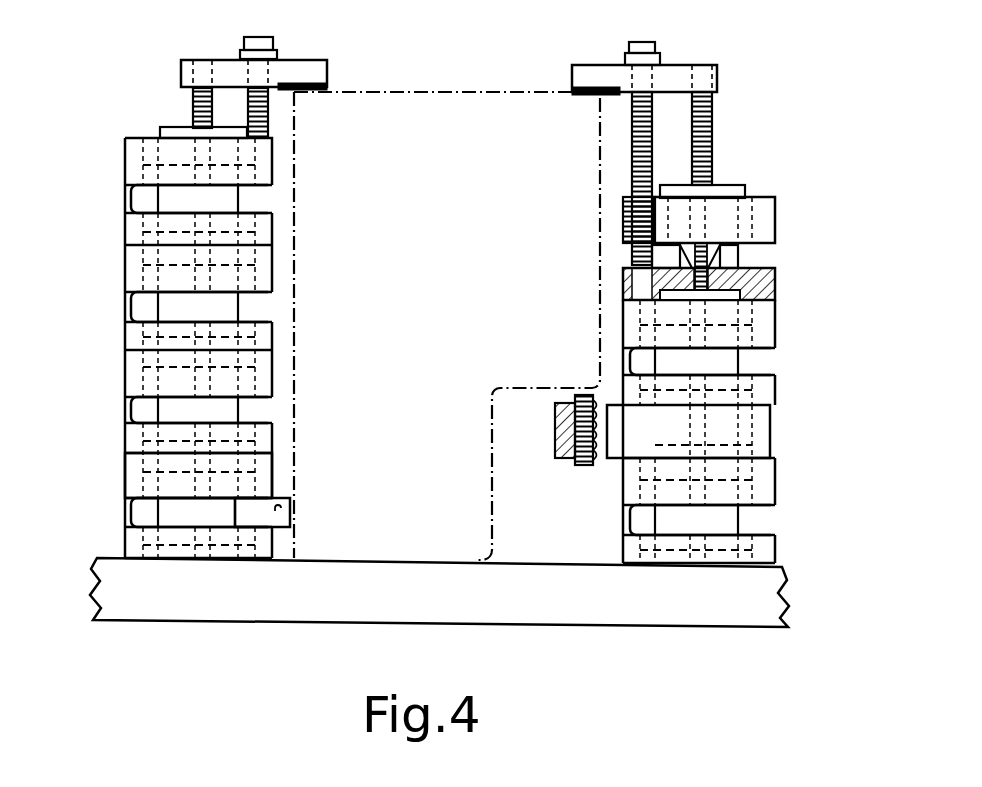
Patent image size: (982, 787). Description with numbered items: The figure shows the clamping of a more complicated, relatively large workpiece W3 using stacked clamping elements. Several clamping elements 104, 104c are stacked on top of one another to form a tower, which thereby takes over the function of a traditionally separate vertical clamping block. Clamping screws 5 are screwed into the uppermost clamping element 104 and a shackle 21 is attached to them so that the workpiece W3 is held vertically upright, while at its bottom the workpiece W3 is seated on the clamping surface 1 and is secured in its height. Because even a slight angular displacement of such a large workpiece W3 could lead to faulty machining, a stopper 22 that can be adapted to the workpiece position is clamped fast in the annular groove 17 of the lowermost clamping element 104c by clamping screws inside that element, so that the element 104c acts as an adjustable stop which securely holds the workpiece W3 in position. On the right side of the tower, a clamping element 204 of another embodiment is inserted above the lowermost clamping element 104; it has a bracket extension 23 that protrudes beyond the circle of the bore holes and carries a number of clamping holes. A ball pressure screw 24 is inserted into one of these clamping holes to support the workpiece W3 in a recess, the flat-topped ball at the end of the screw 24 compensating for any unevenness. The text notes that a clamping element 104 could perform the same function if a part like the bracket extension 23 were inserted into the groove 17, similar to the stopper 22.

The clamping surface 1 is at (785, 591).
The clamping screws 5 is at (252, 98).
The annular groove 17 is at (165, 520).
The shackle 21 is at (313, 72).
The stopper 22 is at (291, 507).
The bracket extension 23 is at (610, 466).
The ball pressure screw 24 is at (578, 466).
The clamping element 104 is at (130, 380).
The lowermost clamping element 104c is at (131, 488).
The clamping element 204 is at (760, 429).
The workpiece W3 is at (447, 89).